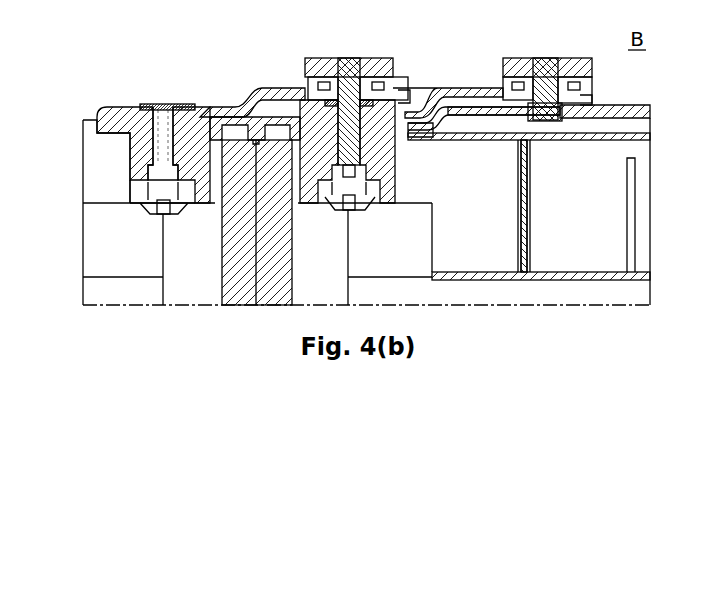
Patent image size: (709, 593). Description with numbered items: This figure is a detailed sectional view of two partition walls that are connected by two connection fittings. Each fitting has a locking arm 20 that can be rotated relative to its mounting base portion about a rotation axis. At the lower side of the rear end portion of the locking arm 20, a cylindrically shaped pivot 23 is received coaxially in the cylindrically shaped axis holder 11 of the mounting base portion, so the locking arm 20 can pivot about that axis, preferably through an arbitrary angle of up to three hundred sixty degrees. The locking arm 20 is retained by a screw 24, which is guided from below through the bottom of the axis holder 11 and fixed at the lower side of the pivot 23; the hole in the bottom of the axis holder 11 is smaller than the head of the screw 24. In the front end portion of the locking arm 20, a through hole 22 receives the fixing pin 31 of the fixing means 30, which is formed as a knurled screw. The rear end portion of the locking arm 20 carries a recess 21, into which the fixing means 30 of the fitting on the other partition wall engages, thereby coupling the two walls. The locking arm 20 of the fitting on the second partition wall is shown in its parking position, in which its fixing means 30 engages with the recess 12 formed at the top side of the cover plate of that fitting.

The axis holder 11 is at (132, 162).
The recess 12 is at (572, 113).
The locking arm 20 is at (265, 90).
The recess 21 is at (158, 132).
The through hole 22 is at (340, 112).
The pivot 23 is at (143, 140).
The screw 24 is at (157, 203).
The fixing means 30 is at (368, 67).
The fixing pin 31 is at (345, 103).